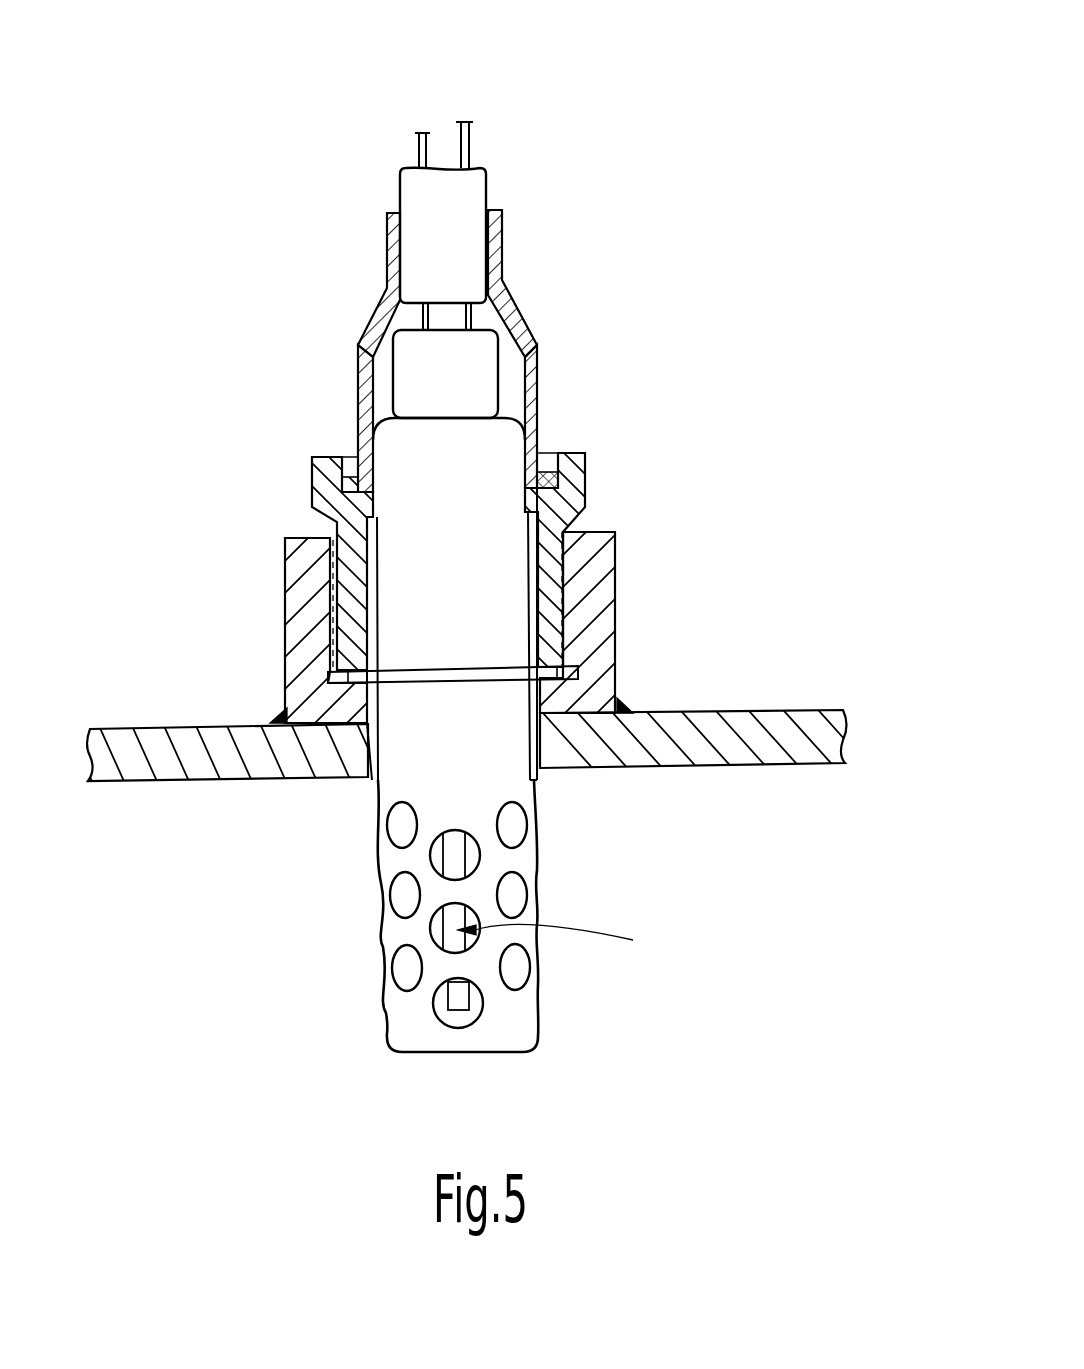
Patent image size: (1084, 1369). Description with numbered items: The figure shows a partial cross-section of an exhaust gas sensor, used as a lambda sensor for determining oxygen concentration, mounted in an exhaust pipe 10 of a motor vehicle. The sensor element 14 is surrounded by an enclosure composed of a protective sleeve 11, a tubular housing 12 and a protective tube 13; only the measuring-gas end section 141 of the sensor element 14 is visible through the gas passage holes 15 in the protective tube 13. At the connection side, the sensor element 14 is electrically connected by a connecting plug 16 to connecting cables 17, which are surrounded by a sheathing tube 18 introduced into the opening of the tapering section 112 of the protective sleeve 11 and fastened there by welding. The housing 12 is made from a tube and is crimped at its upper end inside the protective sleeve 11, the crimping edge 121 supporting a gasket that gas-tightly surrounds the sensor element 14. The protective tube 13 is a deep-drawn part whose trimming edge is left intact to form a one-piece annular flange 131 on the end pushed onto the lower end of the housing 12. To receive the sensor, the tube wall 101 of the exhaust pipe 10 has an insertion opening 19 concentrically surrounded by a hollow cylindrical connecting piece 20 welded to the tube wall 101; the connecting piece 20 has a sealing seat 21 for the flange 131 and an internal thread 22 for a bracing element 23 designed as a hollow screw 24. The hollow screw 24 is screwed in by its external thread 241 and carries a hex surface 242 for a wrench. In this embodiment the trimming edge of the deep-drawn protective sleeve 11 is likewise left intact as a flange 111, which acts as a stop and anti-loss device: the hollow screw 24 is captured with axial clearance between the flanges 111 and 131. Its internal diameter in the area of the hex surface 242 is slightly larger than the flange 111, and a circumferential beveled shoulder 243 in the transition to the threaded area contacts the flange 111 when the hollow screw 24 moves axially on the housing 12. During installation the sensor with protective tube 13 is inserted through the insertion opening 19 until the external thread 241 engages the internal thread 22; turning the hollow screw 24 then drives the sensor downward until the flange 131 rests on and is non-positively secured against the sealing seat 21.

The exhaust pipe 10 is at (808, 879).
The protective sleeve 11 is at (414, 329).
The housing 12 is at (467, 483).
The protective tube 13 is at (430, 752).
The sensor element 14 is at (562, 934).
The gas passage holes 15 is at (410, 967).
The connecting plug 16 is at (457, 366).
The connecting cables 17 is at (475, 147).
The sheathing tube 18 is at (450, 237).
The insertion opening 19 is at (537, 773).
The connecting piece 20 is at (593, 643).
The sealing seat 21 is at (580, 671).
The internal thread 22 is at (600, 595).
The bracing element 23 is at (315, 522).
The hollow screw 24 is at (342, 530).
The tube wall 101 is at (797, 712).
The flange 111 is at (583, 450).
The tapering section 112 is at (505, 265).
The crimping edge 121 is at (383, 417).
The annular flange 131 is at (403, 690).
The end section 141 is at (458, 997).
The external thread 241 is at (333, 617).
The hex surface 242 is at (325, 474).
The beveled shoulder 243 is at (560, 492).